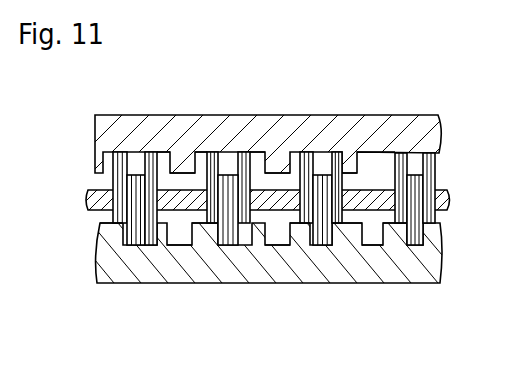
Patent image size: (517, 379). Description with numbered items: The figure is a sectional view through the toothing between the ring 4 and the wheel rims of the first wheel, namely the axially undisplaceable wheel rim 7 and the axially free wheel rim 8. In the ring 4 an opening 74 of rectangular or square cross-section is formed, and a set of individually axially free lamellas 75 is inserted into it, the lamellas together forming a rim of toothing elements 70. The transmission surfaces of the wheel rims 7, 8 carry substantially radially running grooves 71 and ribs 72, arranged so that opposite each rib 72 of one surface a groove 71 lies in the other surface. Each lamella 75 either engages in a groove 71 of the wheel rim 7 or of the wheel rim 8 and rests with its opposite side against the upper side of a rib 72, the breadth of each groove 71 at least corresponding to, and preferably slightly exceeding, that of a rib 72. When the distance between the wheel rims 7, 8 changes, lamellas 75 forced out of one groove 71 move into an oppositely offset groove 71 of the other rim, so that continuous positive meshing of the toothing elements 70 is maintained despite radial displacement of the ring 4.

The ring 4 is at (383, 190).
The axially undisplaceable wheel rim 7 is at (368, 263).
The axially free wheel rim 8 is at (283, 143).
The toothing elements 70 is at (136, 205).
The groove 71 is at (161, 155).
The rib 72 is at (183, 168).
The opening 74 is at (256, 250).
The lamella 75 is at (226, 243).